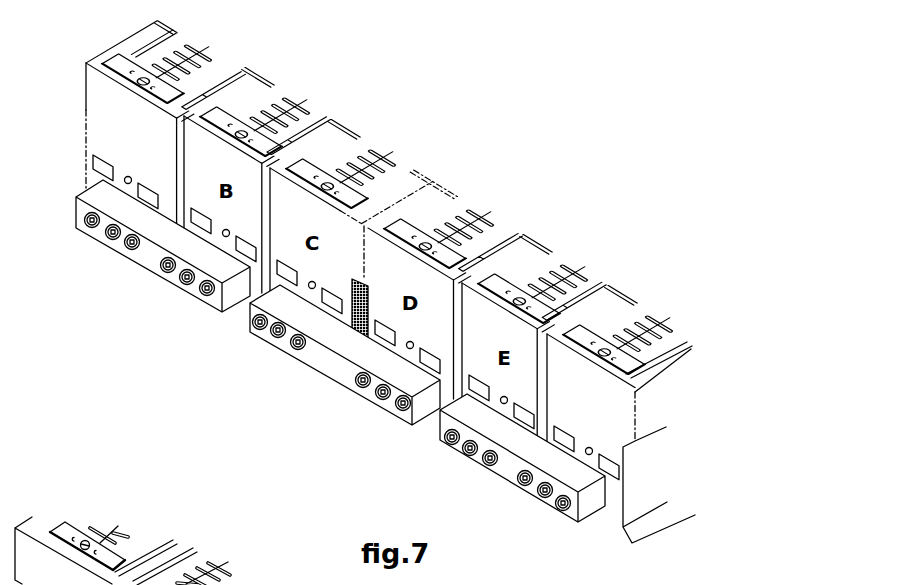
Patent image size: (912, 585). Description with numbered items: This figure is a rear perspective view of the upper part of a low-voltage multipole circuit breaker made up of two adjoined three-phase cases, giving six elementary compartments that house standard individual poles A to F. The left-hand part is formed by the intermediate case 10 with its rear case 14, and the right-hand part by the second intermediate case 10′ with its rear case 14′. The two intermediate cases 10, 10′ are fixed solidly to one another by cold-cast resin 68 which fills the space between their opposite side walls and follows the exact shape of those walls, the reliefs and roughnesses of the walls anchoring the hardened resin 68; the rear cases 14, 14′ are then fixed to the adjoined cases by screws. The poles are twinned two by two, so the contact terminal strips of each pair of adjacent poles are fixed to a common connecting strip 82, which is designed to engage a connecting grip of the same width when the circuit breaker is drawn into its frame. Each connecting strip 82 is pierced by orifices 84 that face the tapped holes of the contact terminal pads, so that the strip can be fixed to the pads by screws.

The intermediate case 10 is at (133, 110).
The rear case 14 is at (117, 58).
The common connecting strip 82 is at (163, 273).
The orifices 84 is at (205, 292).
The resin 68 is at (359, 304).
The intermediate case 10′ is at (639, 414).
The rear case 14′ is at (641, 376).